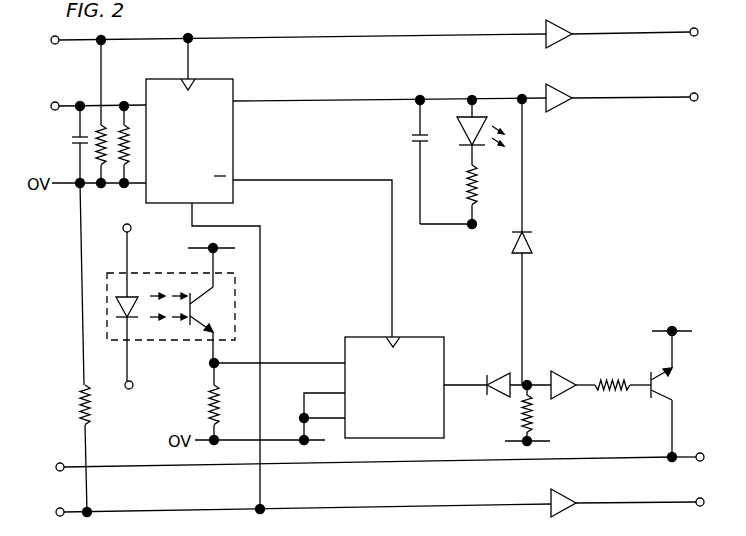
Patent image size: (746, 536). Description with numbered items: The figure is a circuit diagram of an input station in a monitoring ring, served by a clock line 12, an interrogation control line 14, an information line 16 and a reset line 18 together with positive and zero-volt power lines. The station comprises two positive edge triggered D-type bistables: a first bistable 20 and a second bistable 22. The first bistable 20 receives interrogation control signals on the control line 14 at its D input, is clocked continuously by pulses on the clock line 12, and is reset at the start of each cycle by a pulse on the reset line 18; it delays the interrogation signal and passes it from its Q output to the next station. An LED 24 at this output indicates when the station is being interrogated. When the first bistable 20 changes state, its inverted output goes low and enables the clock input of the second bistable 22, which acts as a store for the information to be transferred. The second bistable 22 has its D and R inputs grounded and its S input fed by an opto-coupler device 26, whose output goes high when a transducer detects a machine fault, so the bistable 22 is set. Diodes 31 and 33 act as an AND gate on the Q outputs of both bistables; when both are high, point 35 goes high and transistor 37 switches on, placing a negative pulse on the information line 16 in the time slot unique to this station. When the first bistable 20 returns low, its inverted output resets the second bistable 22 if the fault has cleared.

The clock line 12 is at (357, 35).
The interrogation control line 14 is at (81, 107).
The information line 16 is at (363, 466).
The reset line 18 is at (363, 506).
The first bistable 20 is at (195, 139).
The second bistable 22 is at (397, 395).
The LED 24 is at (478, 148).
The opto-coupler device 26 is at (180, 345).
The diode 31 is at (540, 243).
The diode 33 is at (498, 373).
The point 35 is at (531, 380).
The transistor 37 is at (650, 373).